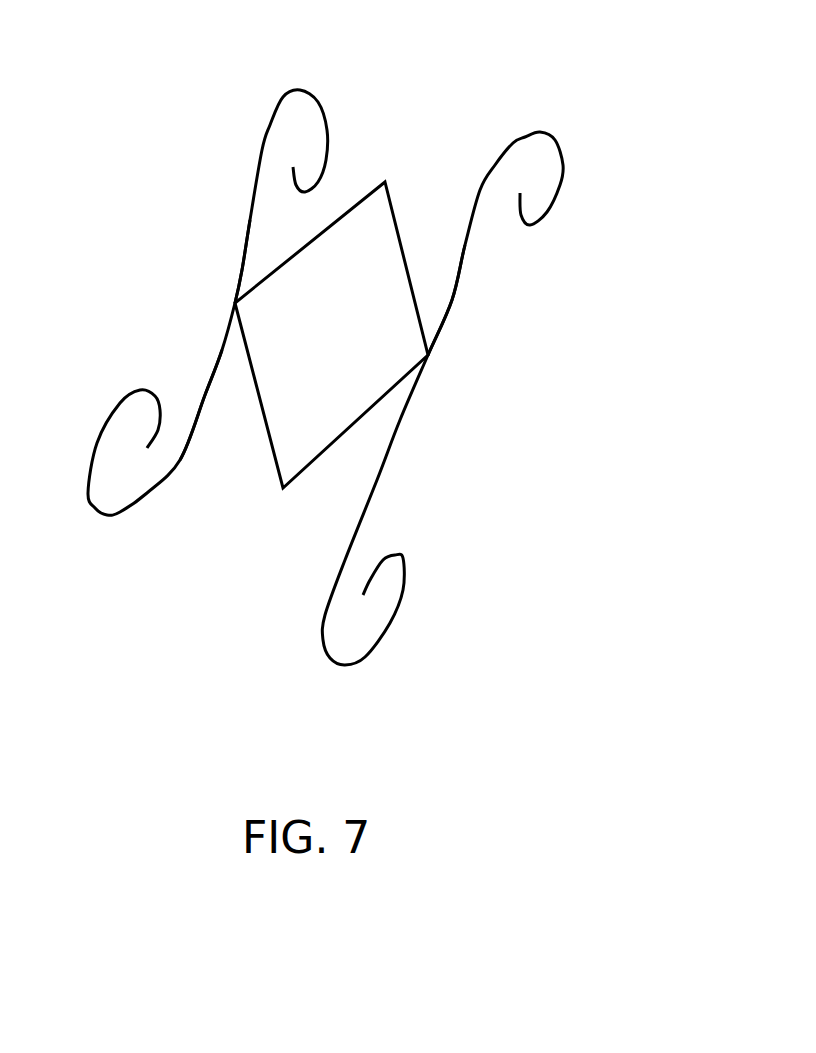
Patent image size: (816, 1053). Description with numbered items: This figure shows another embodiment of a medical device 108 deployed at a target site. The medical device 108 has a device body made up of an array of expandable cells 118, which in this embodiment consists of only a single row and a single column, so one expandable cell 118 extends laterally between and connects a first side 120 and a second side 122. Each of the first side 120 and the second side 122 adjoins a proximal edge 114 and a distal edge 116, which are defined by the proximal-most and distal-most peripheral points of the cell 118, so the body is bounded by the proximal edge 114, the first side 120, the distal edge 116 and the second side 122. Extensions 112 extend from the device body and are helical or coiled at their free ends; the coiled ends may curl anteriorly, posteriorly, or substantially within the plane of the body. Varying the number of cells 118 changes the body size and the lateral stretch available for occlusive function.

The medical device 108 is at (320, 337).
The extensions 112 is at (295, 92).
The proximal edge 114 is at (230, 448).
The distal edge 116 is at (458, 162).
The expandable cells 118 is at (347, 432).
The first side 120 is at (240, 268).
The second side 122 is at (452, 302).